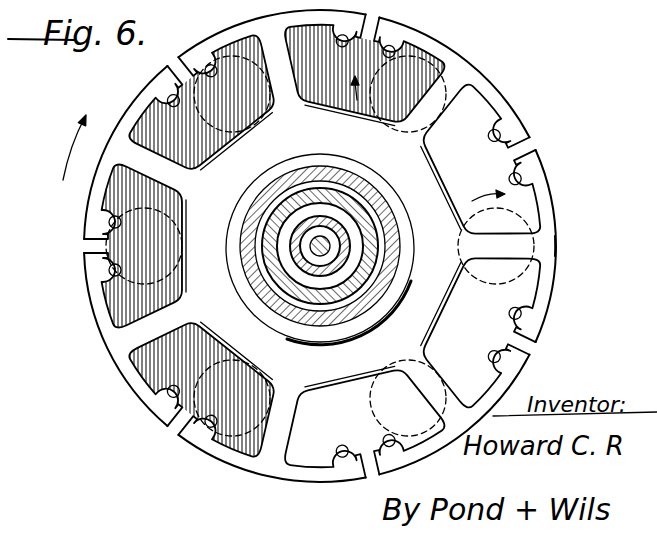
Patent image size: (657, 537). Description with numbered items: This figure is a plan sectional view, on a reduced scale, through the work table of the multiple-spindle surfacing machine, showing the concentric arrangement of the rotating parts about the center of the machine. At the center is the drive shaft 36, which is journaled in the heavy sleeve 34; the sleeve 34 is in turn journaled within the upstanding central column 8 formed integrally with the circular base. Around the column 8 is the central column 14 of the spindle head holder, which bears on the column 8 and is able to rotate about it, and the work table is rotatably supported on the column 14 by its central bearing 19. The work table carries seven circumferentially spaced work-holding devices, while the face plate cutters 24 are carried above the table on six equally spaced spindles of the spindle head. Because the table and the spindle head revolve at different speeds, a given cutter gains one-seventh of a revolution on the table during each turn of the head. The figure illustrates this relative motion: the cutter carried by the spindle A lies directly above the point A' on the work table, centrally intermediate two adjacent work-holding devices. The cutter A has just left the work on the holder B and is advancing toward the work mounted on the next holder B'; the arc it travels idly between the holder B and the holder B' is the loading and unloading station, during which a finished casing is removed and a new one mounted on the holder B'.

The central column 8 is at (268, 233).
The central column 14 is at (262, 206).
The central bearing 19 is at (245, 253).
The face plate cutters 24 is at (437, 64).
The sleeve 34 is at (307, 260).
The drive shaft 36 is at (313, 253).
The spindle A is at (533, 202).
The point on the work table A' is at (587, 243).
The work holder B is at (507, 210).
The work holder B' is at (473, 371).